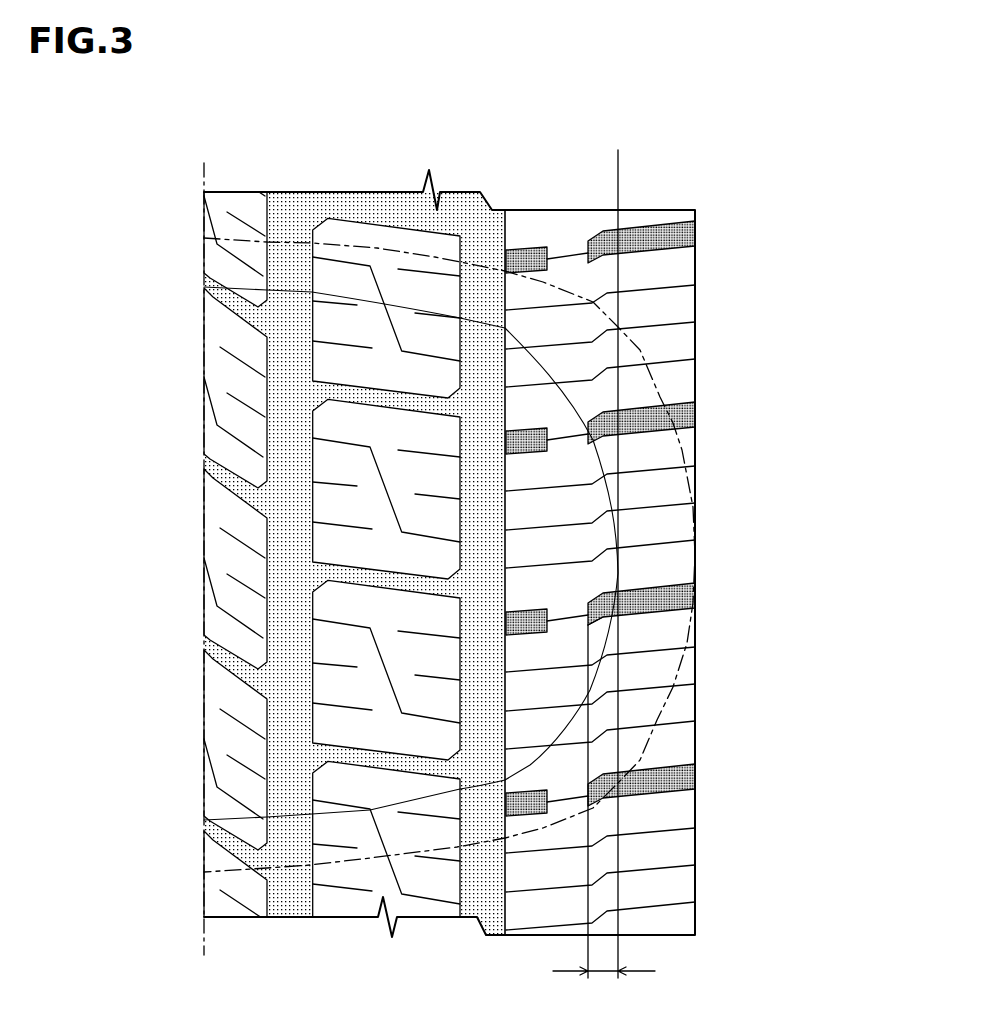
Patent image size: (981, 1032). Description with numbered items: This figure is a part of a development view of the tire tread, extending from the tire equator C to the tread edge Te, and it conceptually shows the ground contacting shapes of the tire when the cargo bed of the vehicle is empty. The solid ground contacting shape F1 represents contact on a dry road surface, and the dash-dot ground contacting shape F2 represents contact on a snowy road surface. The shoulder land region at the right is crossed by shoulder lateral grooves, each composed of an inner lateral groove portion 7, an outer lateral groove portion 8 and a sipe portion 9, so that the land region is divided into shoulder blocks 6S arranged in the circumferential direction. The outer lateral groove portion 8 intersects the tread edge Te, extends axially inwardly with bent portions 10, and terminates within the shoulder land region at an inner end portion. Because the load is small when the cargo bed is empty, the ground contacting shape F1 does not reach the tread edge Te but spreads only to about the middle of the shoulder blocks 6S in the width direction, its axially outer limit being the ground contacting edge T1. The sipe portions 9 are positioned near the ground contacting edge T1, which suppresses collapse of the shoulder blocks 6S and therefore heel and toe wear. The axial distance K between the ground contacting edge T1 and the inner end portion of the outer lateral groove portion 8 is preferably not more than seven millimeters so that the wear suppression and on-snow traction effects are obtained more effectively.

The shoulder block 6S is at (650, 310).
The inner lateral groove portion 7 is at (567, 613).
The outer lateral groove portion 8 is at (648, 603).
The sipe portion 9 is at (570, 603).
The bent portion 10 is at (603, 627).
The tire equator C is at (206, 544).
The ground contacting shape on a dry road surface F1 is at (367, 294).
The ground contacting shape on a snowy road surface F2 is at (337, 245).
The ground contacting edge T1 is at (618, 173).
The tread edge Te is at (697, 263).
The distance K is at (604, 815).